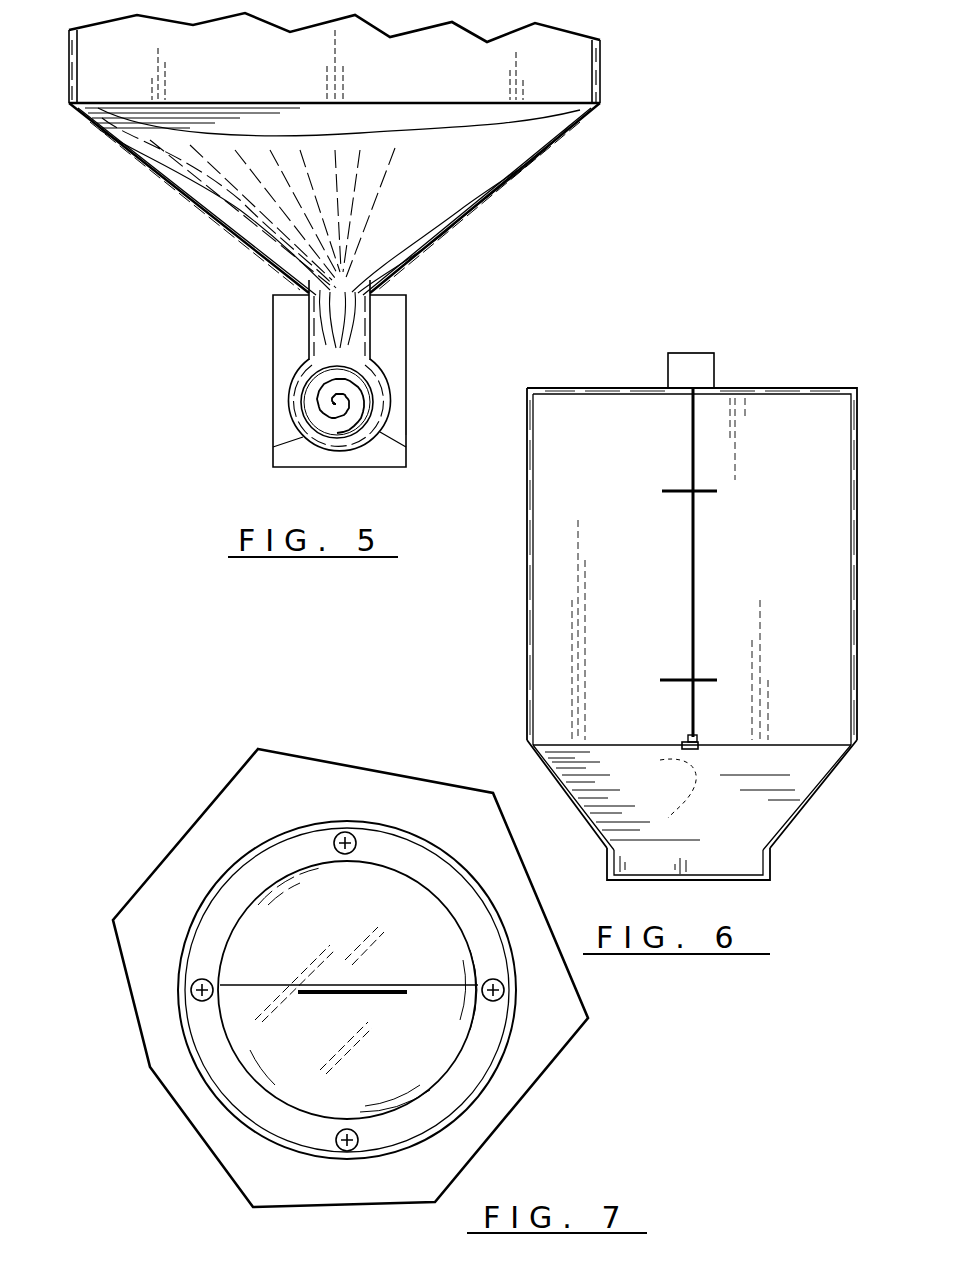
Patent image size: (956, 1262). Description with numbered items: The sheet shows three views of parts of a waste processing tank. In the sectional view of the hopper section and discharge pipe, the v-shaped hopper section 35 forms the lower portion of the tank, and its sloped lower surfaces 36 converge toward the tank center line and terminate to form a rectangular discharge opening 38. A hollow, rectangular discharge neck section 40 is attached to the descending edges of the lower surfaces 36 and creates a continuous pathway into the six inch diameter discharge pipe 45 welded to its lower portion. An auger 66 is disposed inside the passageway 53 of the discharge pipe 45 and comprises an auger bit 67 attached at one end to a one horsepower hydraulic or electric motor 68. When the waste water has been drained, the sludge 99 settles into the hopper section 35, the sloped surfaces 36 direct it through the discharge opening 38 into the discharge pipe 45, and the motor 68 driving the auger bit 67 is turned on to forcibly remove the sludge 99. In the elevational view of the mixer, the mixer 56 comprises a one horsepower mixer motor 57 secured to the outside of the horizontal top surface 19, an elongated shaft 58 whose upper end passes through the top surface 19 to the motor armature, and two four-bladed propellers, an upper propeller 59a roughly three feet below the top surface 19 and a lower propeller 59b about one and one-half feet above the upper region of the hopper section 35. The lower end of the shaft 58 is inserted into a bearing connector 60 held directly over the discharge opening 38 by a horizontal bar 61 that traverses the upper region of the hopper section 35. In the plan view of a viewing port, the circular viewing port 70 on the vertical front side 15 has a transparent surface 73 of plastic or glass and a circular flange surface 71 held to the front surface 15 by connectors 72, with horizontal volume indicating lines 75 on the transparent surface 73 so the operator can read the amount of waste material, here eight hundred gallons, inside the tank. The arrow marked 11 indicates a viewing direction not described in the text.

In FIG. 5, the sludge 99 is at (390, 155).
In FIG. 5, the hopper section 35 is at (187, 207).
In FIG. 6, the hopper section 35 is at (792, 780).
In FIG. 5, the lower surfaces 36 is at (245, 245).
In FIG. 5, the discharge opening 38 is at (320, 349).
In FIG. 6, the discharge opening 38 is at (727, 865).
In FIG. 5, the discharge neck section 40 is at (370, 338).
In FIG. 5, the motor 68 is at (406, 381).
In FIG. 5, the auger 66 is at (412, 426).
In FIG. 5, the passageway 53 is at (303, 440).
In FIG. 5, the discharge pipe 45 is at (376, 432).
In FIG. 5, the auger bit 67 is at (345, 425).
In FIG. 6, the mixer 56 is at (683, 348).
In FIG. 6, the mixer motor 57 is at (707, 372).
In FIG. 6, the top surface 19 is at (820, 390).
In FIG. 6, the shaft 58 is at (697, 573).
In FIG. 6, the upper propeller 59a is at (717, 491).
In FIG. 6, the lower propeller 59b is at (712, 678).
In FIG. 6, the bearing connector 60 is at (686, 735).
In FIG. 6, the horizontal bar 61 is at (698, 749).
In FIG. 7, the vertical front side 15 is at (510, 899).
In FIG. 7, the viewing port 70 is at (222, 838).
In FIG. 7, the circular flange surface 71 is at (437, 868).
In FIG. 7, the connectors 72 is at (336, 835).
In FIG. 7, the transparent surface 73 is at (352, 974).
In FIG. 7, the volume indicating lines 75 is at (308, 990).
In FIG. 7, the view direction 11 is at (396, 984).